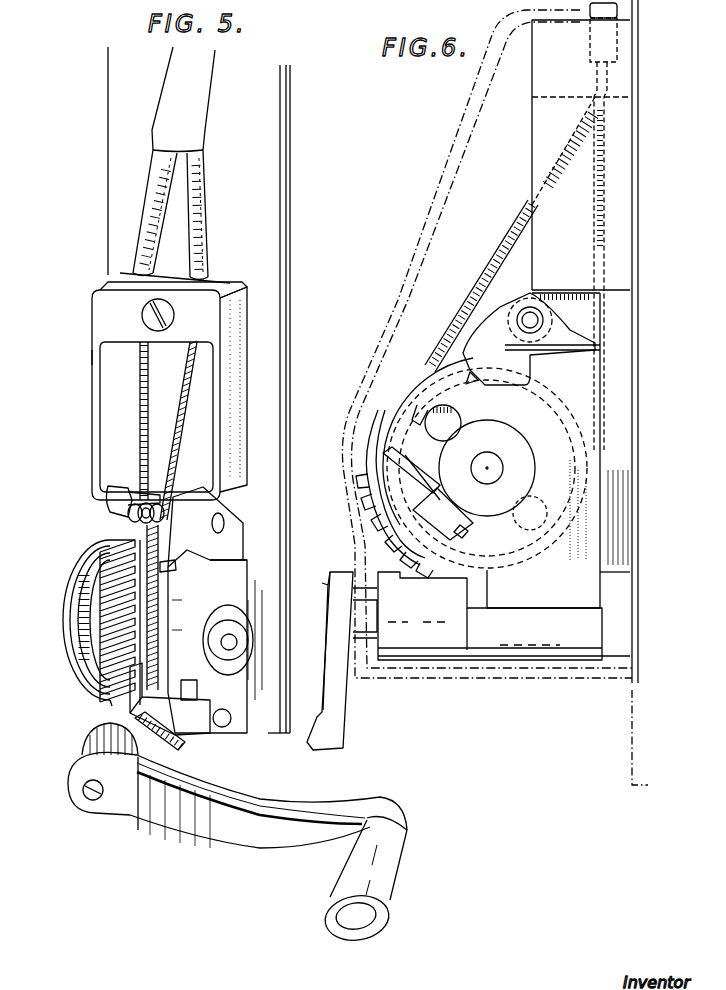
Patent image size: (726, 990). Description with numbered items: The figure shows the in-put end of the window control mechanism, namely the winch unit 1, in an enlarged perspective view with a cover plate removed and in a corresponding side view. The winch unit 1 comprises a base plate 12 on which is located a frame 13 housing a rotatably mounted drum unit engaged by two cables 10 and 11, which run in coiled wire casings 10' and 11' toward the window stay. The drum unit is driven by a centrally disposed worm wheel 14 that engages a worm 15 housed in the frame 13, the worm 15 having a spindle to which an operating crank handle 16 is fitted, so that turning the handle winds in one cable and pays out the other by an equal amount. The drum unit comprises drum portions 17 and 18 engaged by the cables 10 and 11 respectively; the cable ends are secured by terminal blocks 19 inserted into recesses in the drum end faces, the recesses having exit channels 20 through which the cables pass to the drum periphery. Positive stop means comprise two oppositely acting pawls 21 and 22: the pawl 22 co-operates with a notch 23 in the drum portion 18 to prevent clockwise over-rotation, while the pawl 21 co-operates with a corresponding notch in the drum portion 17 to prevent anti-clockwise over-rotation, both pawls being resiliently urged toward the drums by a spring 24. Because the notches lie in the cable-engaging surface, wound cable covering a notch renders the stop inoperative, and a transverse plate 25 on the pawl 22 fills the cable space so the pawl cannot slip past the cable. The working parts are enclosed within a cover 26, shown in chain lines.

In FIG. 5, the winch unit 1 is at (92, 357).
In FIG. 6, the winch unit 1 is at (633, 507).
In FIG. 5, the cable 10 is at (184, 430).
In FIG. 6, the cable 10 is at (510, 234).
In FIG. 5, the coiled wire casing 10' is at (219, 165).
In FIG. 5, the cable 11 is at (107, 421).
In FIG. 6, the cable 11 is at (600, 226).
In FIG. 5, the coiled wire casing 11' is at (136, 161).
In FIG. 5, the base plate 12 is at (281, 535).
In FIG. 5, the frame 13 is at (233, 400).
In FIG. 6, the frame 13 is at (548, 650).
In FIG. 5, the worm wheel 14 is at (180, 735).
In FIG. 6, the worm wheel 14 is at (370, 507).
In FIG. 5, the worm 15 is at (138, 830).
In FIG. 5, the operating crank handle 16 is at (250, 800).
In FIG. 6, the operating crank handle 16 is at (342, 710).
In FIG. 5, the drum portion 17 is at (78, 663).
In FIG. 5, the drum portion 18 is at (165, 590).
In FIG. 6, the drum portion 18 is at (573, 398).
In FIG. 6, the terminal block 19 is at (440, 540).
In FIG. 5, the exit channel 20 is at (140, 671).
In FIG. 6, the exit channel 20 is at (387, 463).
In FIG. 5, the pawl 21 is at (125, 520).
In FIG. 5, the pawl 22 is at (185, 545).
In FIG. 6, the pawl 22 is at (482, 347).
In FIG. 5, the notch 23 is at (160, 645).
In FIG. 6, the notch 23 is at (417, 420).
In FIG. 5, the spring 24 is at (150, 497).
In FIG. 6, the spring 24 is at (560, 345).
In FIG. 5, the transverse plate 25 is at (177, 566).
In FIG. 6, the transverse plate 25 is at (495, 362).
In FIG. 6, the cover 26 is at (420, 245).